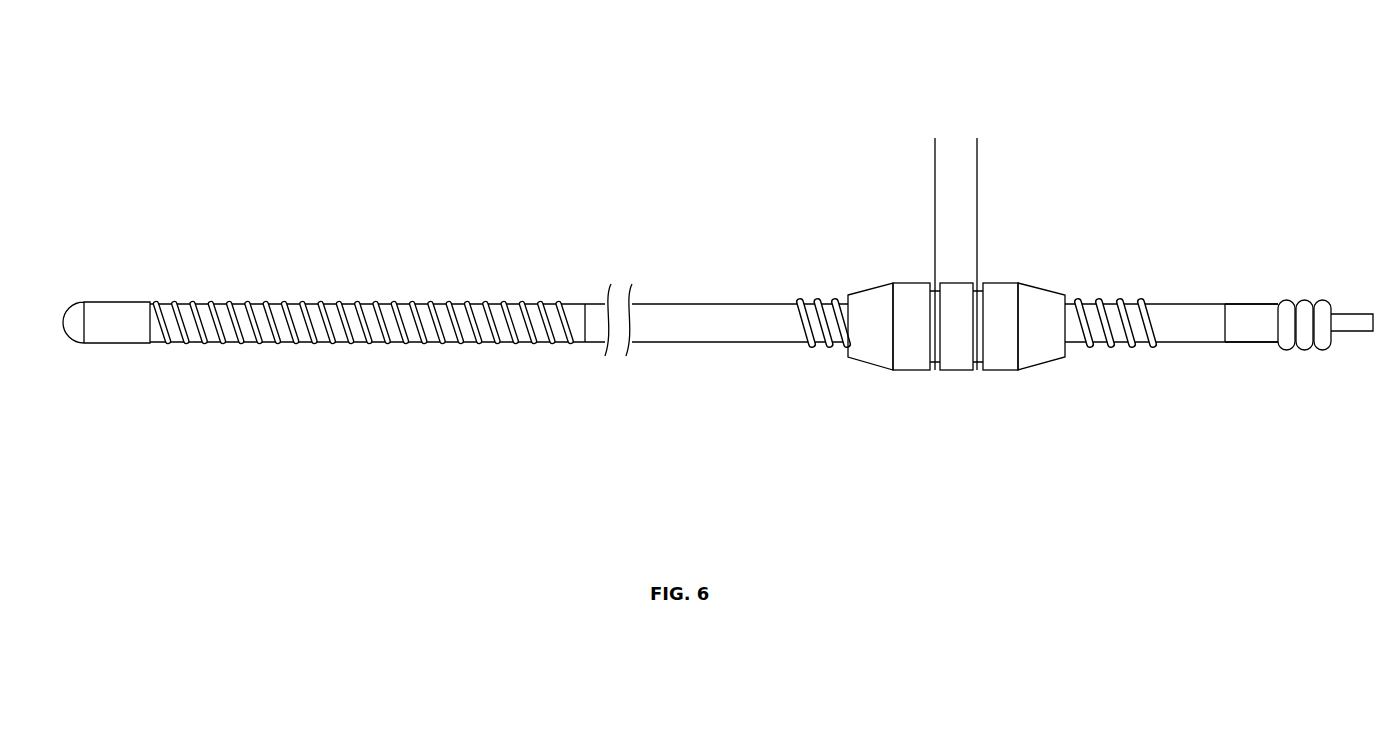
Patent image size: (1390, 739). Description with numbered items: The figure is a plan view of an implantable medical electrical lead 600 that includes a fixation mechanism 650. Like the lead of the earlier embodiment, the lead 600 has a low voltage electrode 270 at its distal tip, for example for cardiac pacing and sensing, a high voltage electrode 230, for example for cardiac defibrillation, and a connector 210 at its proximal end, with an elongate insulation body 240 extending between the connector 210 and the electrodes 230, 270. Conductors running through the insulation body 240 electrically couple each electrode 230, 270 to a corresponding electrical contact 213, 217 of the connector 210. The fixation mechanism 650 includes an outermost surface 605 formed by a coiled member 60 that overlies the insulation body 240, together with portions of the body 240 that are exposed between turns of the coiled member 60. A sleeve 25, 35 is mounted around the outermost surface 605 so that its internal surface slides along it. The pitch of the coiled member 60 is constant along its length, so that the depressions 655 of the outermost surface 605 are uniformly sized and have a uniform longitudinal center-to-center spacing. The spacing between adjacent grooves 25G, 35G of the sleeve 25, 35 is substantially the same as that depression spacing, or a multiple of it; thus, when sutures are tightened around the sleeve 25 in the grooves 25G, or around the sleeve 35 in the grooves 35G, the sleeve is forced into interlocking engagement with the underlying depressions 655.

The implantable medical electrical lead 600 is at (696, 118).
The low voltage electrode 270 is at (70, 290).
The high voltage electrode 230 is at (430, 354).
The elongate insulation body 240 is at (600, 287).
The fixation mechanism 650 is at (1132, 445).
The sleeve 25 is at (977, 278).
The sleeve 35 is at (1014, 238).
The grooves 25G is at (991, 281).
The grooves 35G is at (978, 350).
The depressions 655 is at (840, 300).
The outermost surface 605 is at (834, 346).
The coiled member 60 is at (1131, 282).
The connector 210 is at (1375, 280).
The electrical contact 213 is at (1257, 325).
The electrical contact 217 is at (1360, 322).